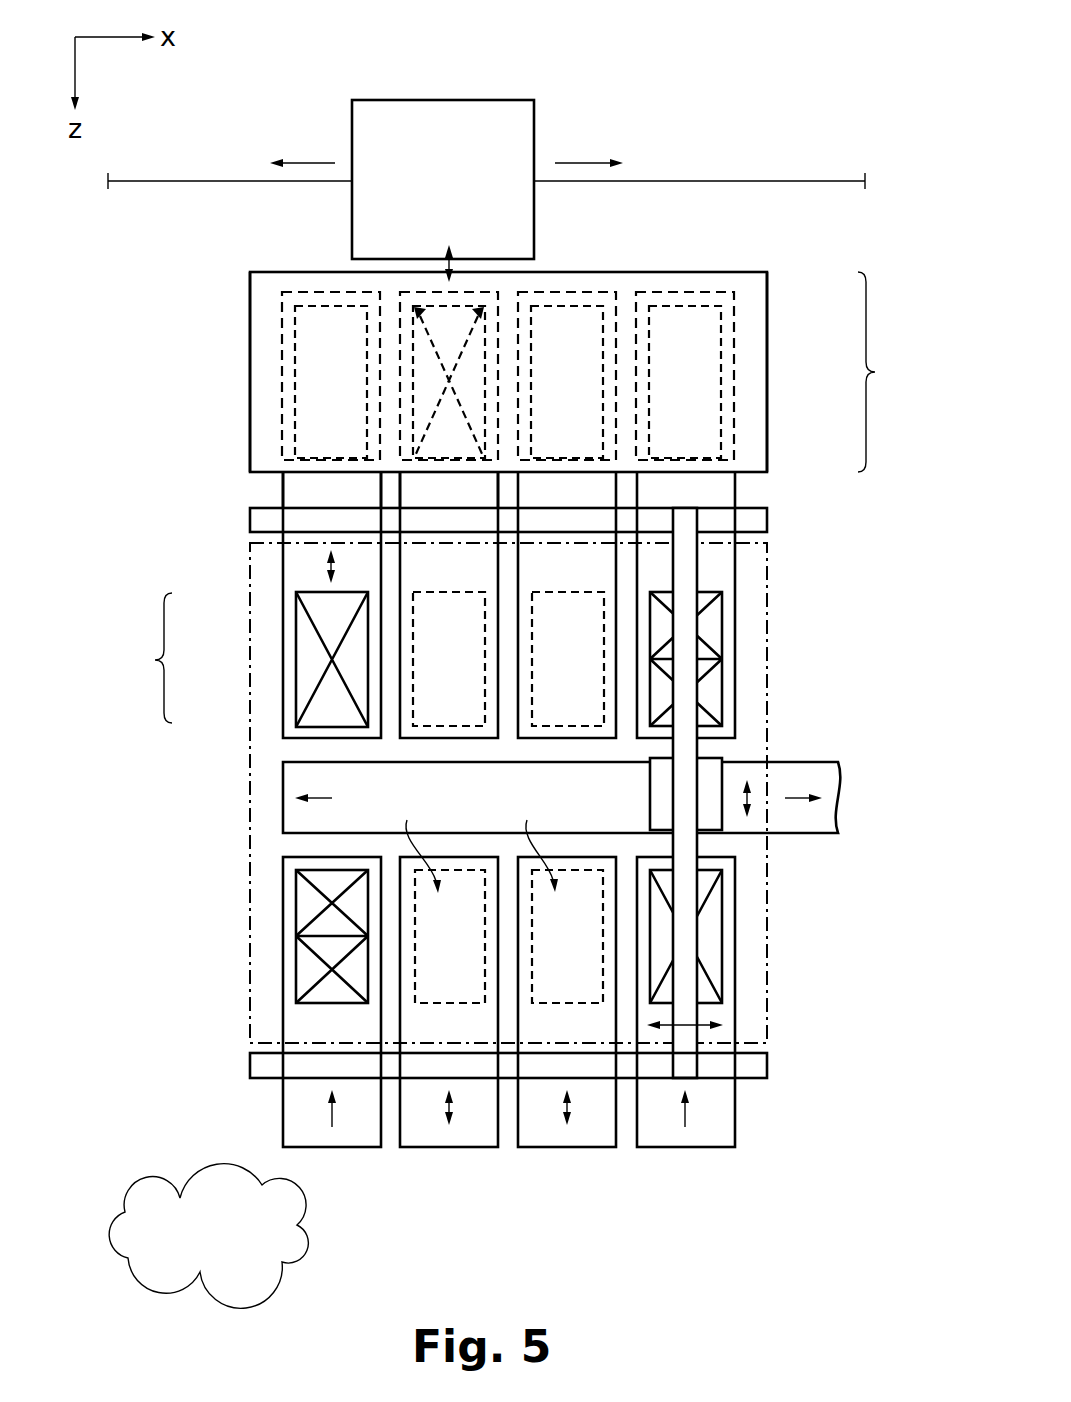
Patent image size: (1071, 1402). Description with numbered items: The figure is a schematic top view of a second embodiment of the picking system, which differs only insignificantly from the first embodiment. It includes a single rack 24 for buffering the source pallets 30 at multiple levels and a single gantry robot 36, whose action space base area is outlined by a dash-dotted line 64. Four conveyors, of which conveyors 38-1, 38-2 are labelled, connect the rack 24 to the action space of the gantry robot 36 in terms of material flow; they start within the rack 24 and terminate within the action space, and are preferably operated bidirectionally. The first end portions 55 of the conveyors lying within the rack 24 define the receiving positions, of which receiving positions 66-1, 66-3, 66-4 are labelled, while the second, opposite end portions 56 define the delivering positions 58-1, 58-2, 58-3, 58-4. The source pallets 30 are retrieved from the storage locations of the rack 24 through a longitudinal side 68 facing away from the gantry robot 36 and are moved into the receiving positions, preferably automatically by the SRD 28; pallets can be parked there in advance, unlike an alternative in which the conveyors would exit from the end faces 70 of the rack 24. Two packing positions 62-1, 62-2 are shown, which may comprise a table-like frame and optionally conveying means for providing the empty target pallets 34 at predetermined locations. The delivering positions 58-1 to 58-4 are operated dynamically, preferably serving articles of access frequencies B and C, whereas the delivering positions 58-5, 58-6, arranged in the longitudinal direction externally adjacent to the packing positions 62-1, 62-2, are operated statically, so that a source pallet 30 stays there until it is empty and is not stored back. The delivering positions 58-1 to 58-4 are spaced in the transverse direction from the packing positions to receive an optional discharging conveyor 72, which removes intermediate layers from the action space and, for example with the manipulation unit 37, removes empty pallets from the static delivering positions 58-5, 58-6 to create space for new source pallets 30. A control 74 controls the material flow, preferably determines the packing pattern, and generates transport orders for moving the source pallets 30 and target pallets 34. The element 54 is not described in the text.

The SRD 28 is at (495, 98).
The longitudinal side 68 is at (733, 270).
The end faces 70 is at (768, 300).
The rack 24 is at (768, 380).
The receiving position 66-1 is at (355, 356).
The receiving position 66-3 is at (591, 356).
The receiving position 66-4 is at (709, 356).
The first end portions 55 is at (882, 372).
The top plate 54 is at (751, 472).
The conveyor 38-1 is at (355, 506).
The conveyor 38-2 is at (473, 506).
The dash-dotted line 64 is at (768, 600).
The second end portions 56 is at (148, 658).
The delivering position 58-1 is at (318, 710).
The delivering position 58-2 is at (473, 634).
The delivering position 58-3 is at (591, 634).
The delivering position 58-4 is at (724, 677).
The delivering position 58-5 is at (298, 907).
The delivering position 58-6 is at (724, 972).
The source pallets 30 is at (462, 452).
The gantry robot 36 is at (786, 830).
The manipulation unit 37 is at (650, 793).
The discharging conveyor 72 is at (803, 762).
The packing position 62-1 is at (412, 840).
The packing position 62-2 is at (530, 839).
The target pallets 34 is at (461, 993).
The control 74 is at (221, 1235).